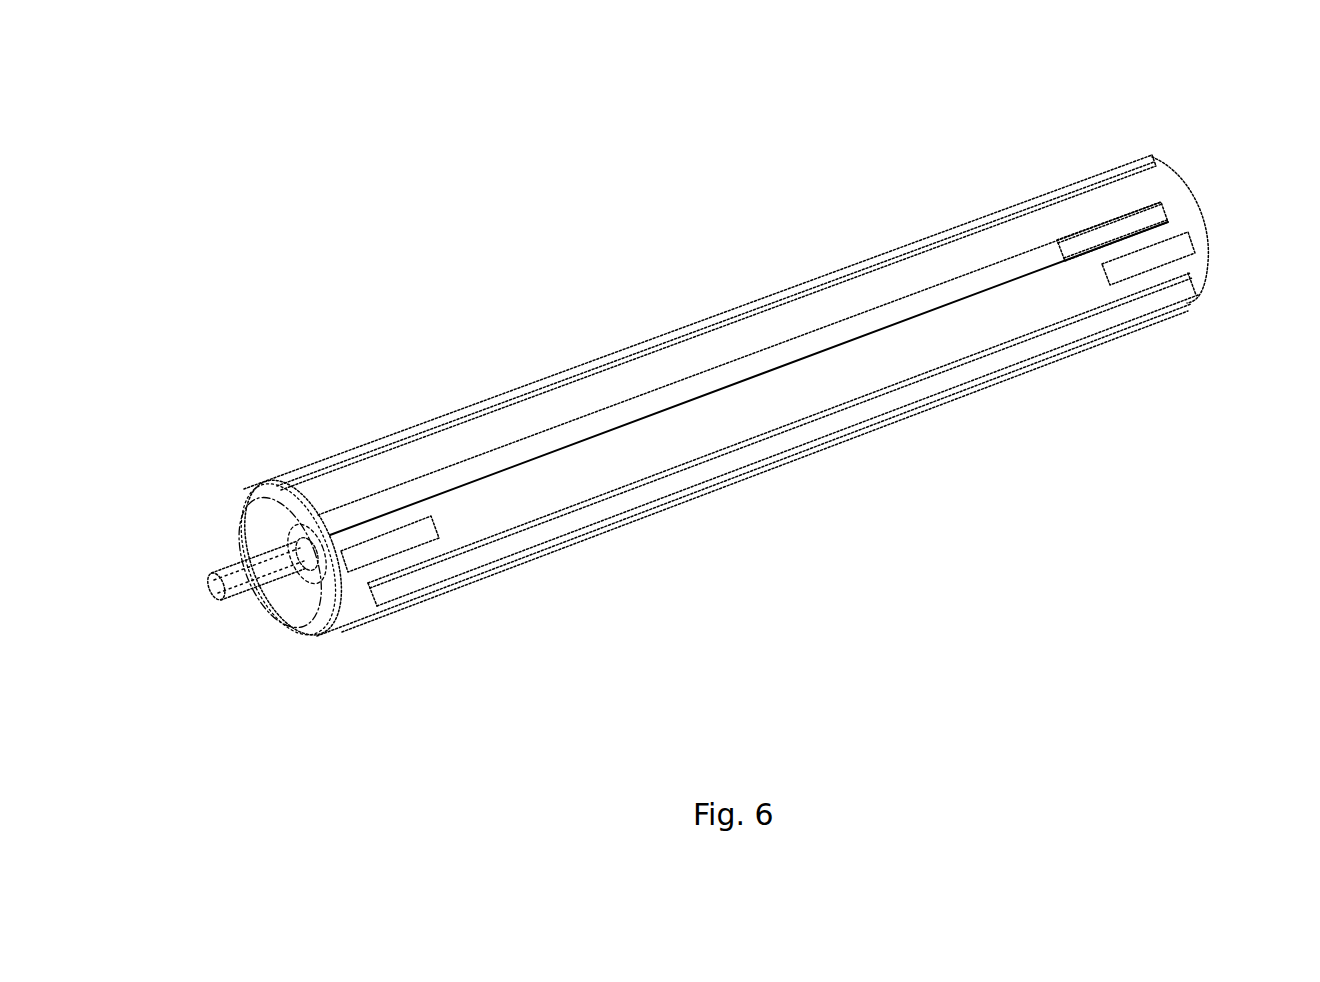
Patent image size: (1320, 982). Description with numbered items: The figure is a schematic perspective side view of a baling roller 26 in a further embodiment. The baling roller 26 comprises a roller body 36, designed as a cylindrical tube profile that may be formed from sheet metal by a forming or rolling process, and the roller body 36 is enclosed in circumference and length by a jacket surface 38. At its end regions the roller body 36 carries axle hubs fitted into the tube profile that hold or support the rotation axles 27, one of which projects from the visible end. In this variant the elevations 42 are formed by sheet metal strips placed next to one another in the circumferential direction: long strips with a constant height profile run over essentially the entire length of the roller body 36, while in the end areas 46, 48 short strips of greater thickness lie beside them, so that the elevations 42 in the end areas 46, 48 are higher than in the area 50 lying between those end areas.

The baling roller 26 is at (610, 283).
The rotation axles 27 is at (218, 587).
The roller body 36 is at (297, 612).
The jacket surface 38 is at (903, 270).
The elevations 42 is at (1081, 348).
The end area 46 is at (1220, 320).
The end area 48 is at (447, 612).
The area between end areas 50 is at (1104, 362).